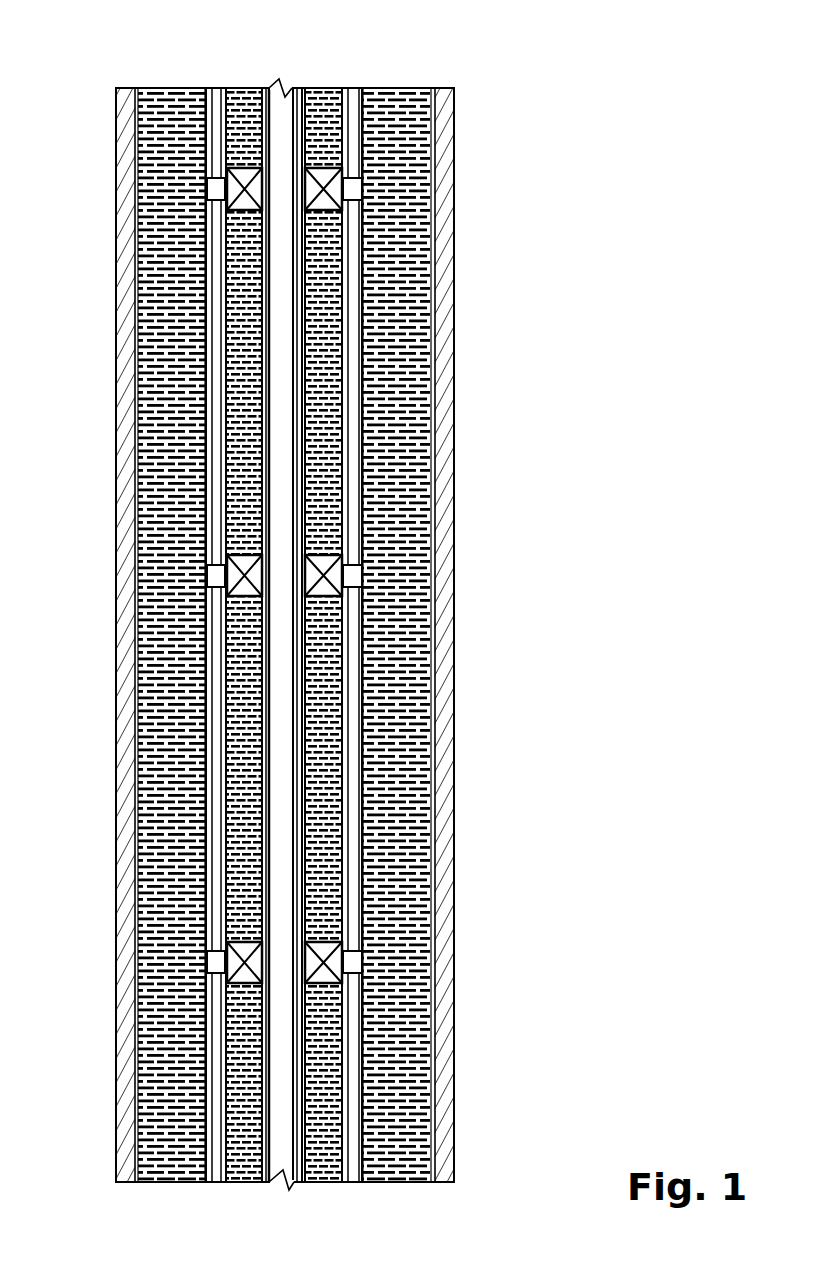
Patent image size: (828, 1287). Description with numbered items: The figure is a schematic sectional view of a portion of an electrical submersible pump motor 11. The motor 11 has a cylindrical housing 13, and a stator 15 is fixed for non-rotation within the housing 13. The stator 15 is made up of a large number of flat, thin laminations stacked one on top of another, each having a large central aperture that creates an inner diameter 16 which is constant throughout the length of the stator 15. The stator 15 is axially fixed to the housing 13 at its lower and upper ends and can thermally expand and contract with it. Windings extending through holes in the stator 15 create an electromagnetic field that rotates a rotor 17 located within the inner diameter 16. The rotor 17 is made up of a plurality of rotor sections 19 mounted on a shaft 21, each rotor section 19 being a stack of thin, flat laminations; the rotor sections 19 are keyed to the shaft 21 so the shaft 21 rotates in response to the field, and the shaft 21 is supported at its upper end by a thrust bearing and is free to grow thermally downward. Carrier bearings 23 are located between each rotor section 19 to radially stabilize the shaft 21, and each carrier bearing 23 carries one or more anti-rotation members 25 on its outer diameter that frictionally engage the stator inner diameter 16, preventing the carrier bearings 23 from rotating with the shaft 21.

The motor 11 is at (506, 127).
The cylindrical housing 13 is at (452, 222).
The stator 15 is at (438, 377).
The inner diameter 16 is at (350, 432).
The rotor 17 is at (349, 303).
The rotor section 19 is at (324, 97).
The shaft 21 is at (277, 110).
The carrier bearing 23 is at (230, 191).
The anti-rotation member 25 is at (230, 577).